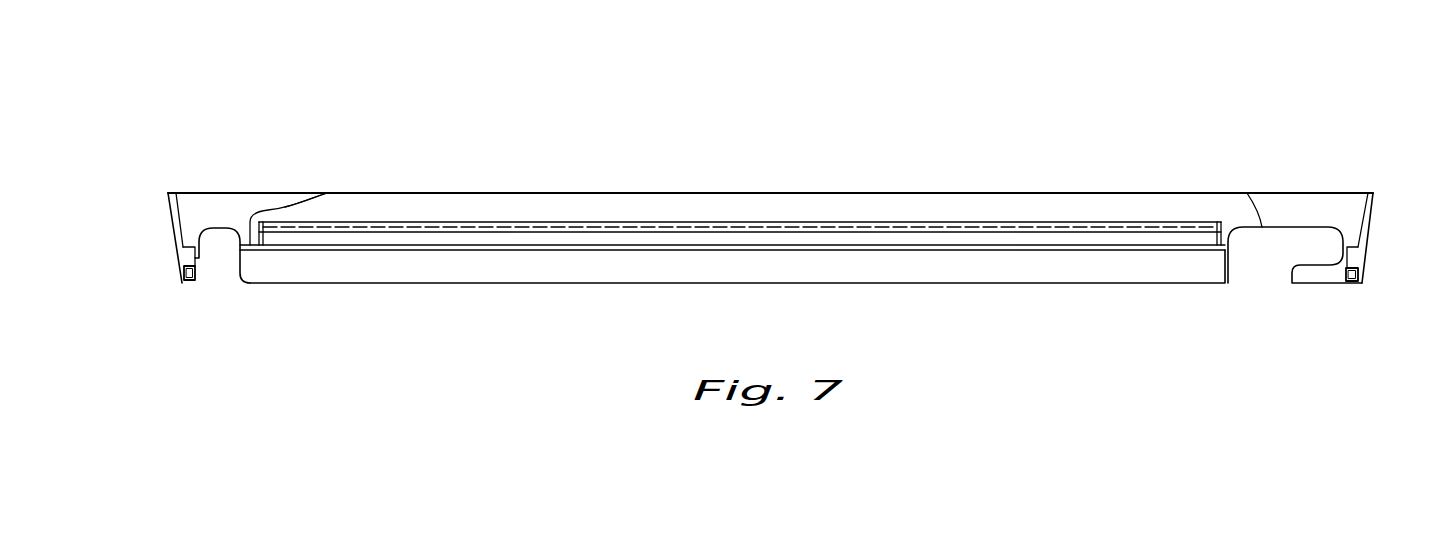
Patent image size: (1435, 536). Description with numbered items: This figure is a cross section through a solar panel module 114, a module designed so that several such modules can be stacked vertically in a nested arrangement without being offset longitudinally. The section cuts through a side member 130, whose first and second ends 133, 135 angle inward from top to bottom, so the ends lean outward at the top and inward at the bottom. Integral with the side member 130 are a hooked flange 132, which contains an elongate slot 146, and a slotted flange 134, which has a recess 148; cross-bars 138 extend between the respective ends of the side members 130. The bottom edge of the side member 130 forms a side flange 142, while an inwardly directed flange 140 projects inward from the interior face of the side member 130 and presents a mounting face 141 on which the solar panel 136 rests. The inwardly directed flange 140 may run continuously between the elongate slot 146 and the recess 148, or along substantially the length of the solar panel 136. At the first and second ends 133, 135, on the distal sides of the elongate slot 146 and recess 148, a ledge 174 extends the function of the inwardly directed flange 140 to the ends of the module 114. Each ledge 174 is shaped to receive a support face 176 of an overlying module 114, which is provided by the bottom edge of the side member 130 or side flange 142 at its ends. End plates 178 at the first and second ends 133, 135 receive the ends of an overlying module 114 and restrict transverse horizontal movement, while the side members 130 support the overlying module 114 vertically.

The solar panel module 114 is at (886, 120).
The side member 130 is at (1080, 193).
The hooked flange 132 is at (1268, 193).
The first end 133 is at (1376, 316).
The slotted flange 134 is at (225, 193).
The second end 135 is at (150, 305).
The solar panel 136 is at (623, 222).
The cross-bar 138 is at (199, 258).
The inwardly directed flange 140 is at (373, 245).
The mounting face 141 is at (327, 194).
The side flange 142 is at (538, 272).
The elongate slot 146 is at (1247, 193).
The recess 148 is at (232, 230).
The ledge 174 is at (192, 247).
The support face 176 is at (190, 284).
The end plate 178 is at (172, 222).